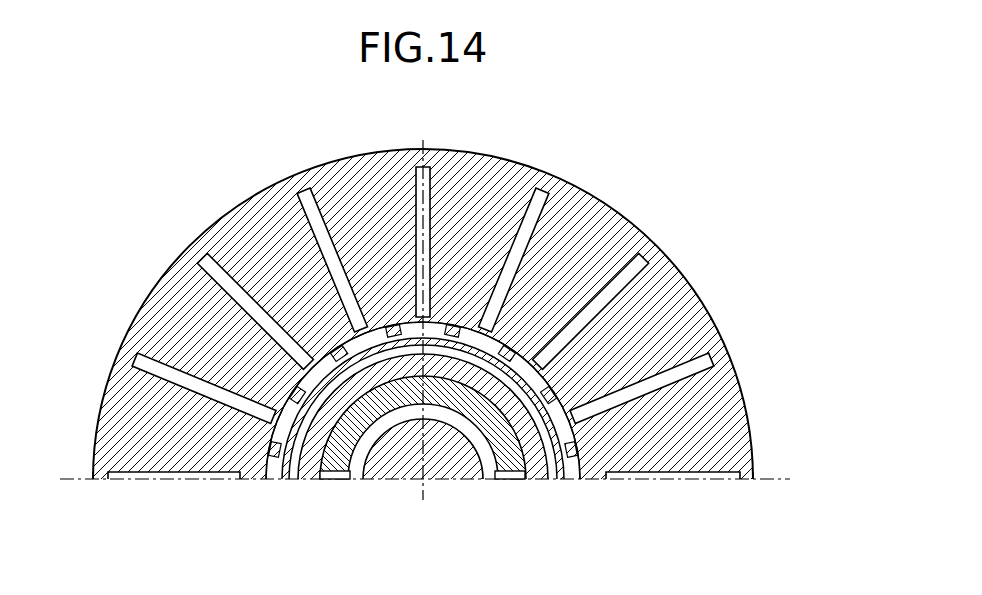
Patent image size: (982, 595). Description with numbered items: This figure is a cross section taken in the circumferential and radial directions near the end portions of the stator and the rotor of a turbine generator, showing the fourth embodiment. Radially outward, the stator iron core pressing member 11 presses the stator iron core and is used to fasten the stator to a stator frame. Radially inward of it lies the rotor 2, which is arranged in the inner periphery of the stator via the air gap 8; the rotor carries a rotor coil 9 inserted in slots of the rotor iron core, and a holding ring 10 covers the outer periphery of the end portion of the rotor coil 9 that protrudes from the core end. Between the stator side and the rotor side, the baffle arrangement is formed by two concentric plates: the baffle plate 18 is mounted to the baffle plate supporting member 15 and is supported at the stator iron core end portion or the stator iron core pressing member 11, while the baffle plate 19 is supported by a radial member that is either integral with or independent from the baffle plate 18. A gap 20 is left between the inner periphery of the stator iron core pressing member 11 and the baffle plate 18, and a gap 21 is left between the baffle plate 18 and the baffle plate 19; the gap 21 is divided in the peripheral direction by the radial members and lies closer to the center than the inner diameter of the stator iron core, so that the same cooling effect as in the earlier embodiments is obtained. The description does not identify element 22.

The rotor 2 is at (455, 480).
The air gap 8 is at (355, 474).
The rotor coil 9 is at (383, 397).
The holding ring 10 is at (542, 480).
The stator iron core pressing member 11 is at (485, 178).
The baffle plate supporting member 15 is at (653, 383).
The baffle plate 18 is at (597, 467).
The baffle plate 19 is at (573, 480).
The gap 20 is at (508, 308).
The gap 21 is at (570, 375).
The spacer 22 is at (580, 441).